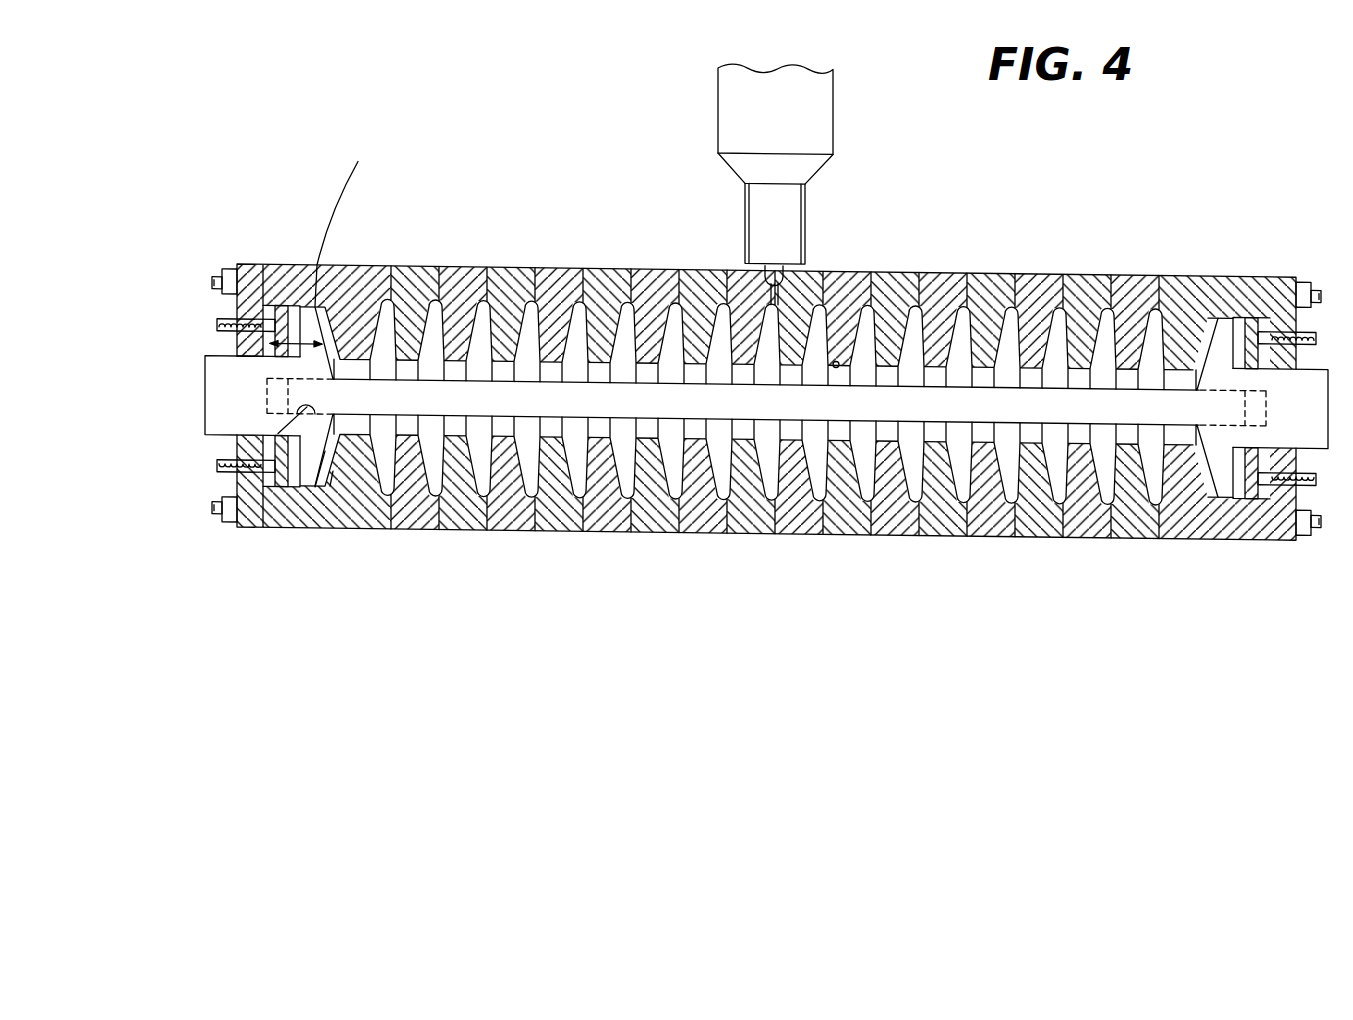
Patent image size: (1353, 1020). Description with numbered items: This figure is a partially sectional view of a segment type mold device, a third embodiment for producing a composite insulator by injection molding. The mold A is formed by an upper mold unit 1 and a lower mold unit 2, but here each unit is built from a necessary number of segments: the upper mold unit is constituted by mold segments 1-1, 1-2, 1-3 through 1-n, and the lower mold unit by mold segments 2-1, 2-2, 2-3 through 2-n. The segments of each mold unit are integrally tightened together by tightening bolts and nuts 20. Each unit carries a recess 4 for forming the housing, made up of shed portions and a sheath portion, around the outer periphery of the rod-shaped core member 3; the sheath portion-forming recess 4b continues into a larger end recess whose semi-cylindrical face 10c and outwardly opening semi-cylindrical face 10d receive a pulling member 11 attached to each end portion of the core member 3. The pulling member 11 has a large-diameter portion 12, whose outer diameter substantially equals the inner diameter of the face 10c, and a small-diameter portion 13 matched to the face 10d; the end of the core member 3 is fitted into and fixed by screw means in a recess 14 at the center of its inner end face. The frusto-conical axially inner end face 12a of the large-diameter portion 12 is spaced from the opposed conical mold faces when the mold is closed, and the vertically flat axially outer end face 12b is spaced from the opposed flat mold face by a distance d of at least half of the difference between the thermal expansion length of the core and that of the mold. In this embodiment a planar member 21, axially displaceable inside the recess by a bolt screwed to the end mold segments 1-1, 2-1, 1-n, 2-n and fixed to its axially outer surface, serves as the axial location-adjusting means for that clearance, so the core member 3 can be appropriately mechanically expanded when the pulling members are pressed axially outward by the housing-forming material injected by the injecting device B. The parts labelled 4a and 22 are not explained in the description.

The mold A is at (743, 407).
The injecting device B is at (822, 96).
The upper mold unit 1 is at (743, 431).
The mold segment 1-1 is at (360, 263).
The mold segment 1-2 is at (413, 263).
The mold segment 1-3 is at (463, 262).
The mold segment 1-n is at (1200, 263).
The lower mold unit 2 is at (708, 432).
The mold segment 2-1 is at (318, 489).
The mold segment 2-2 is at (417, 528).
The mold segment 2-3 is at (460, 526).
The mold segment 2-n is at (1218, 530).
The core member 3 is at (905, 390).
The recess 4 is at (876, 369).
The stator tooth flank 4a is at (893, 300).
The sheath portion-forming recess 4b is at (836, 354).
The semi-cylindrical face 10c is at (302, 500).
The semi-cylindrical face 10d is at (232, 357).
The pulling member 11 is at (204, 376).
The large-diameter portion 12 is at (297, 470).
The axially inner end face 12a is at (331, 489).
The axially outer end face 12b is at (292, 477).
The small-diameter portion 13 is at (212, 395).
The recess 14 is at (223, 439).
The tightening bolts and nuts 20 is at (1315, 527).
The planar member 21 is at (283, 266).
The upper tie bolt 22 is at (227, 320).